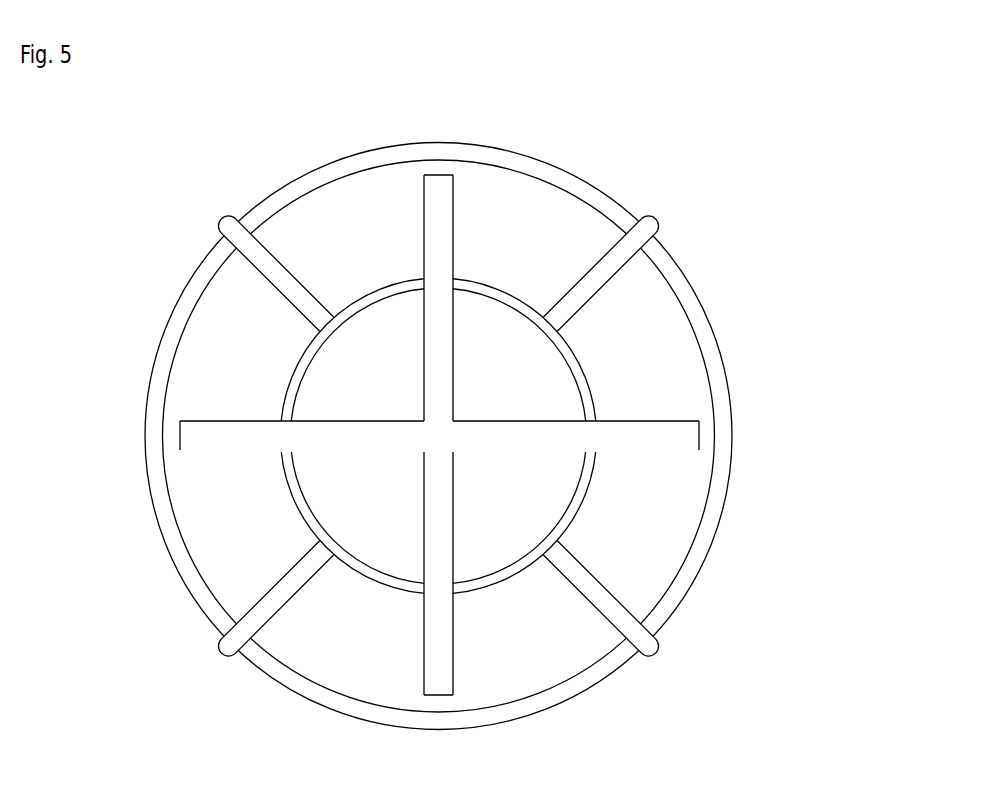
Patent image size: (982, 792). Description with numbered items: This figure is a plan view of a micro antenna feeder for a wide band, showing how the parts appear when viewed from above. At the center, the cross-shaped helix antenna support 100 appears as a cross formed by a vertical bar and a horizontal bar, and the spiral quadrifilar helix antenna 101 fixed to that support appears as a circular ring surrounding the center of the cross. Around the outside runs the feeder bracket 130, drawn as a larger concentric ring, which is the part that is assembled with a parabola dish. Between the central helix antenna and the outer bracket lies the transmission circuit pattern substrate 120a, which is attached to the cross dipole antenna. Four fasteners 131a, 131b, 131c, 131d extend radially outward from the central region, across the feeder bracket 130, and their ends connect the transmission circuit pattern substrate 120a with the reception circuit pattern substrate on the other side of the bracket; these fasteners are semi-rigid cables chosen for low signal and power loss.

The helix antenna support 100 is at (200, 437).
The spiral quadrifilar helix antenna 101 is at (590, 385).
The transmission circuit pattern substrate 120a is at (351, 218).
The feeder bracket 130 is at (695, 307).
The fastener 131a is at (252, 613).
The fastener 131b is at (613, 610).
The fastener 131c is at (647, 227).
The fastener 131d is at (242, 225).